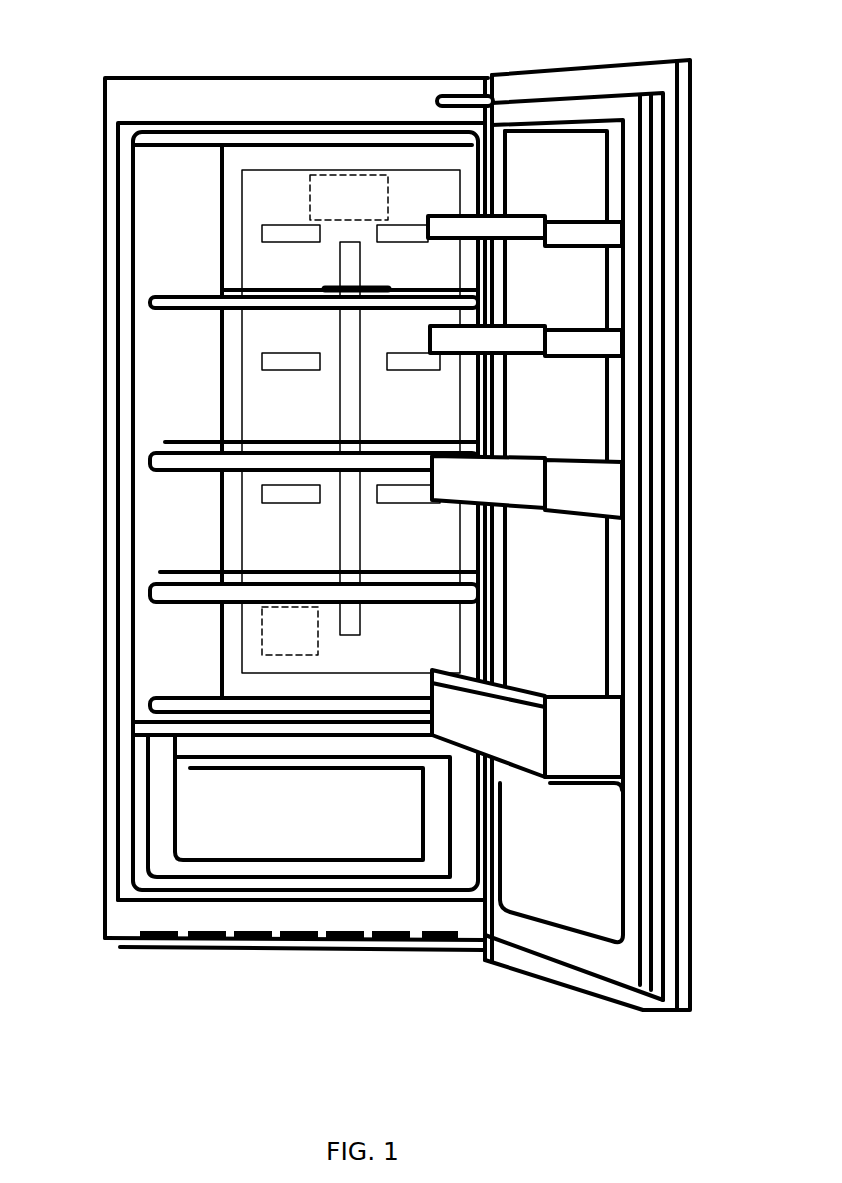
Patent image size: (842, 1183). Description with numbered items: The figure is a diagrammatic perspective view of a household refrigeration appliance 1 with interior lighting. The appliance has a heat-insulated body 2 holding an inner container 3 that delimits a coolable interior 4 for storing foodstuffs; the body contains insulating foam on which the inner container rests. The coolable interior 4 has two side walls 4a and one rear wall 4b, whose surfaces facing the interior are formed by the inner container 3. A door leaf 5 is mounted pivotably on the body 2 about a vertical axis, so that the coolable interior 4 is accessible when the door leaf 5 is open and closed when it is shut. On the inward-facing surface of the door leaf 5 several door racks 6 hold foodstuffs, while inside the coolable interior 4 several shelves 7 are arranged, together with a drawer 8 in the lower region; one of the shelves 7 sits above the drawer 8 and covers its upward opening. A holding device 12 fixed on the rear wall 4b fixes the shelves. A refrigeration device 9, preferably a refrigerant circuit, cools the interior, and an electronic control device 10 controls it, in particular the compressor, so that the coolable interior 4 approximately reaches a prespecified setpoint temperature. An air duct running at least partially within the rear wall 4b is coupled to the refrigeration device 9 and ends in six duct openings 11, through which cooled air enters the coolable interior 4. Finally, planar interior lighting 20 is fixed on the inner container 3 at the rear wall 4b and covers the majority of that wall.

The household refrigeration appliance 1 is at (96, 151).
The heat-insulated body 2 is at (105, 735).
The inner container 3 is at (140, 430).
The coolable interior 4 is at (228, 345).
The side walls 4a is at (167, 205).
The rear wall 4b is at (272, 152).
The door leaf 5 is at (694, 563).
The door racks 6 is at (603, 235).
The shelves 7 is at (185, 300).
The drawer 8 is at (299, 806).
The refrigeration device 9 is at (290, 631).
The electronic control device 10 is at (349, 197).
The duct openings 11 is at (283, 230).
The holding device 12 is at (352, 545).
The planar interior lighting 20 is at (262, 205).